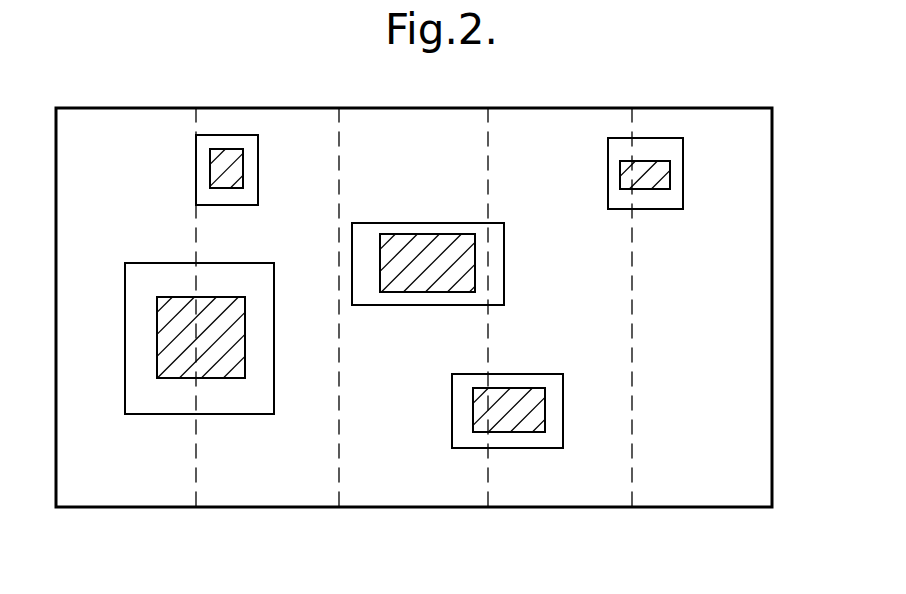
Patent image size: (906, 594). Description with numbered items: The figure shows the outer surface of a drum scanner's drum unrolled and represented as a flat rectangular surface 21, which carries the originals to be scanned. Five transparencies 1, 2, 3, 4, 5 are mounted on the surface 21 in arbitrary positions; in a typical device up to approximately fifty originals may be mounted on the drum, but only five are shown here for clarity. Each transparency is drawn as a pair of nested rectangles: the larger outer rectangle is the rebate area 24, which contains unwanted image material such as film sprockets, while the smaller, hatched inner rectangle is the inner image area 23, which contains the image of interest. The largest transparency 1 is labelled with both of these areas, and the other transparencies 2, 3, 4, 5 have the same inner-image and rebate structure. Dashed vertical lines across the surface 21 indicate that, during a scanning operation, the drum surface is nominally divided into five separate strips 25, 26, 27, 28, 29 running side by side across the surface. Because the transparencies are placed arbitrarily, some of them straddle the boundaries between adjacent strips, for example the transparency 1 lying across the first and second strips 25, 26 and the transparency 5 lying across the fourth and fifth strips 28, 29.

The transparency 1 is at (178, 336).
The transparency 2 is at (352, 252).
The transparency 3 is at (452, 403).
The transparency 4 is at (258, 163).
The transparency 5 is at (608, 172).
The drum surface 21 is at (118, 108).
The inner image area 23 is at (170, 341).
The outer rebate area 24 is at (248, 404).
The strip 25 is at (153, 515).
The strip 26 is at (287, 515).
The strip 27 is at (427, 515).
The strip 28 is at (577, 515).
The strip 29 is at (709, 515).